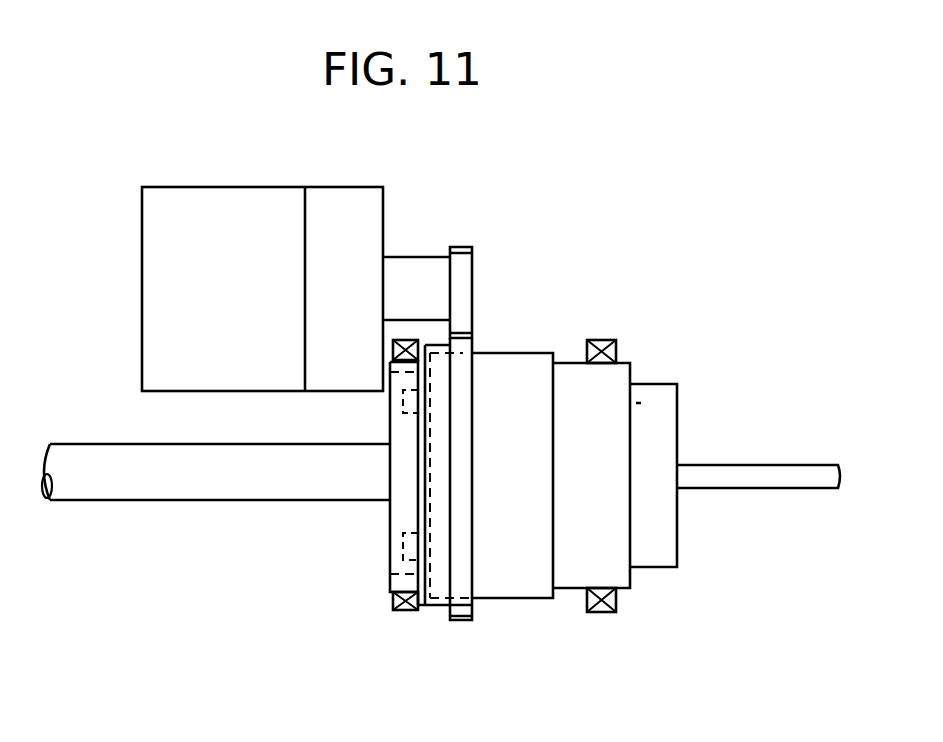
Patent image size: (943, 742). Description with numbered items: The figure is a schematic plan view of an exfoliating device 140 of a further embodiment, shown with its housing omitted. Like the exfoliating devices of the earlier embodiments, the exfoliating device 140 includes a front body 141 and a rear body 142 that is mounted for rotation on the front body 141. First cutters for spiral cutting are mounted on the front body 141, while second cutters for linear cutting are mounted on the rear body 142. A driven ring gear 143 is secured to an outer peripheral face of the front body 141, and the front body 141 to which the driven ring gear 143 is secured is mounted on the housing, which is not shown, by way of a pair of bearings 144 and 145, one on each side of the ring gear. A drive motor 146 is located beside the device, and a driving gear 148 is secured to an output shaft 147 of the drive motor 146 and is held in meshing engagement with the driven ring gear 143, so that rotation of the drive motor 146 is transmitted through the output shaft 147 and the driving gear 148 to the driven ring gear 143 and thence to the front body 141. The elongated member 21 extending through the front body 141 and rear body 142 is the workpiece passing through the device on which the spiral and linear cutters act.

The shaft 21 is at (231, 500).
The exfoliating device 140 is at (546, 336).
The front body 141 is at (505, 358).
The rear body 142 is at (657, 393).
The driven ring gear 143 is at (458, 622).
The bearing 144 is at (404, 612).
The bearing 145 is at (600, 613).
The drive motor 146 is at (218, 200).
The output shaft 147 is at (411, 257).
The driving gear 148 is at (467, 247).